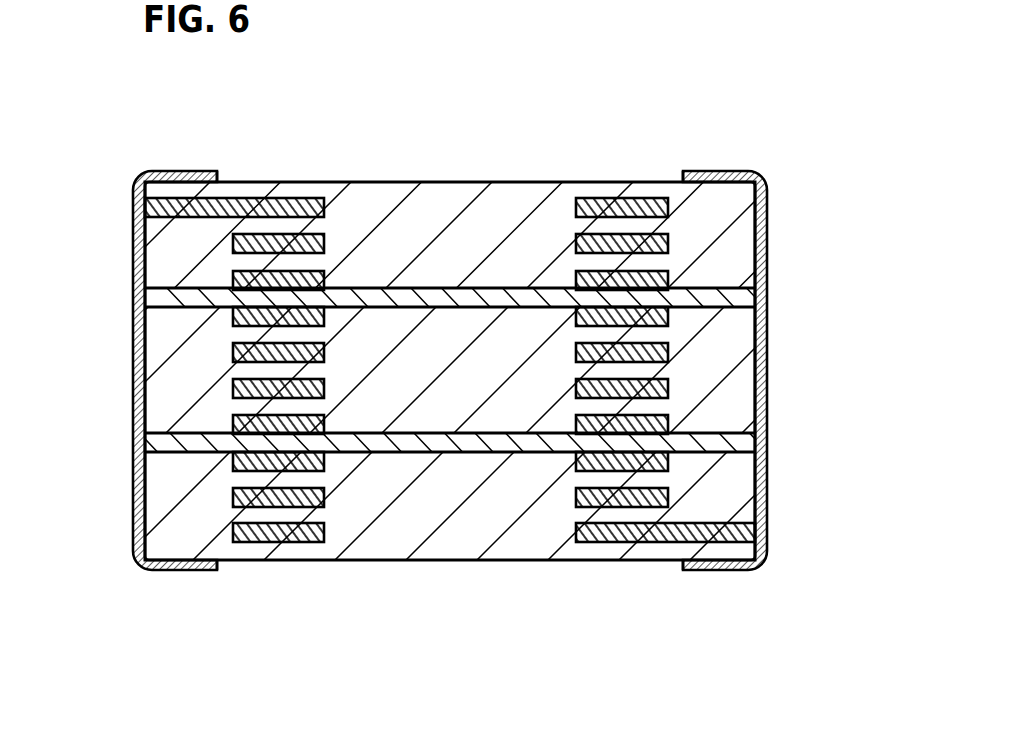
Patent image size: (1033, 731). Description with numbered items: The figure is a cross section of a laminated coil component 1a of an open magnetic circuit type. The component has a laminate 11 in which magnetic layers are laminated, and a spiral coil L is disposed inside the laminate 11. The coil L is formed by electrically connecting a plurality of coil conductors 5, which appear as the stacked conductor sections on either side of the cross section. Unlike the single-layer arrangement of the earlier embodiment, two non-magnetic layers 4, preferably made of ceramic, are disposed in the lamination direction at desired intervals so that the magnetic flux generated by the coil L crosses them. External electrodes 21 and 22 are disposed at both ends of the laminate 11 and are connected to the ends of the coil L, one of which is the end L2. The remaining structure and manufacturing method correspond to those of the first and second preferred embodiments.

The laminated coil component 1a is at (645, 102).
The laminate 11 is at (465, 182).
The external electrode 21 is at (163, 570).
The external electrode 22 is at (767, 215).
The non-magnetic layer 4 is at (767, 320).
The coil conductor 5 is at (233, 252).
The end of the coil L2 is at (134, 224).
The spiral coil L is at (353, 513).